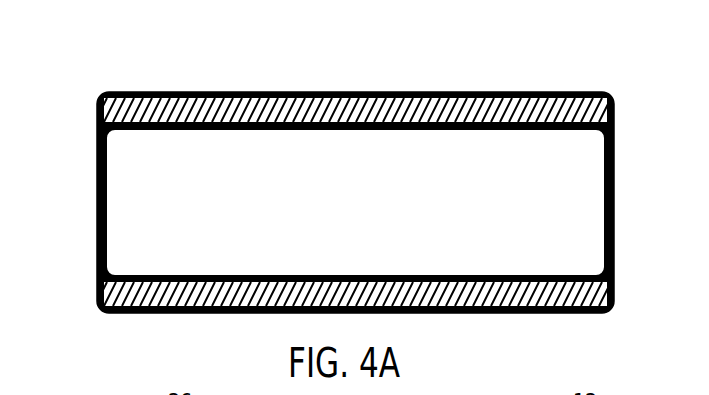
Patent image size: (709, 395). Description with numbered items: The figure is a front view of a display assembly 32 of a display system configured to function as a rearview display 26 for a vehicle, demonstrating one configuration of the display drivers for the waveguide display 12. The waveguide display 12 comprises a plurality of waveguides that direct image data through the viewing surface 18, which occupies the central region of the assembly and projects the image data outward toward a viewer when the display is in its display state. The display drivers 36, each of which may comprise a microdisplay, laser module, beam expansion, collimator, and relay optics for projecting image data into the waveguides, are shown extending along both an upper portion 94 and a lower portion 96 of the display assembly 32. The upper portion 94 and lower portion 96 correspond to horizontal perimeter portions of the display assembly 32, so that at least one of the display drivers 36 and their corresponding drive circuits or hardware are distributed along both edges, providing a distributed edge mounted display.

The rearview display 26 is at (383, 206).
The waveguide display 12 is at (583, 136).
The display assembly 32 is at (613, 257).
The display drivers 36 is at (406, 104).
The upper portion 94 is at (482, 106).
The lower portion 96 is at (492, 302).
The viewing surface 18 is at (364, 212).